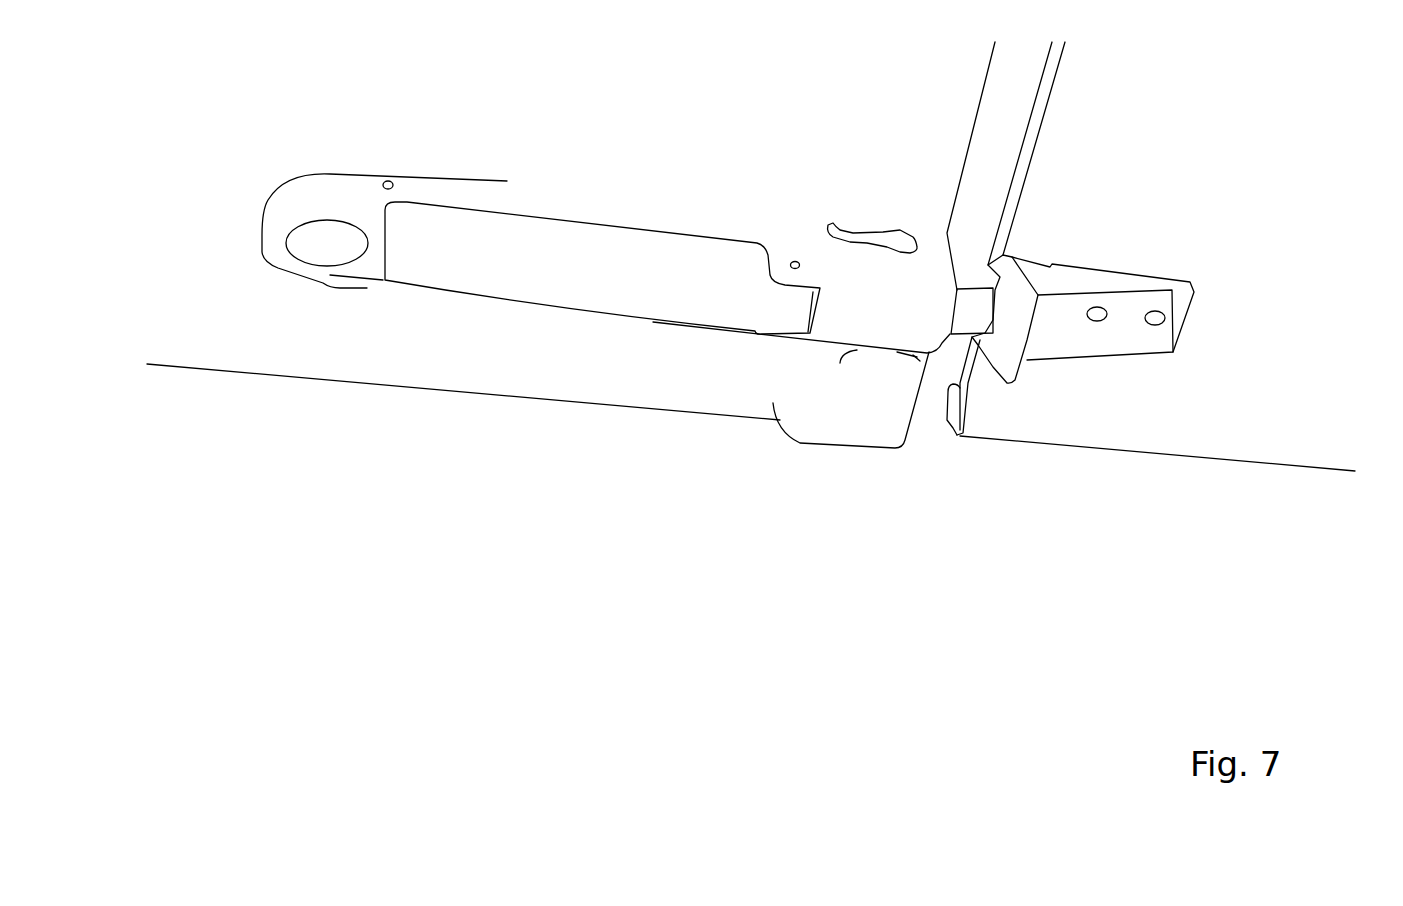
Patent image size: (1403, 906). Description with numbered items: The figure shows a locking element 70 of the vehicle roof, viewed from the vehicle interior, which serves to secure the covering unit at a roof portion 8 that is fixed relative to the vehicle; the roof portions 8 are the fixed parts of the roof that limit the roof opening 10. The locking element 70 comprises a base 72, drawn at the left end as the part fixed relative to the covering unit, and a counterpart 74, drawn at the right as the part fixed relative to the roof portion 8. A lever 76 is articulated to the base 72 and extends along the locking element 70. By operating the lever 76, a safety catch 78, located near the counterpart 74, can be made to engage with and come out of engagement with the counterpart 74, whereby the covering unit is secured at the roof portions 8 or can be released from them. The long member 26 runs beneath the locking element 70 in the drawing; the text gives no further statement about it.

The roof portion 8 is at (1148, 452).
The roof opening 10 is at (962, 333).
The frame tube 26 is at (511, 397).
The locking element 70 is at (442, 297).
The base 72 is at (350, 288).
The counterpart 74 is at (1100, 355).
The lever 76 is at (650, 325).
The safety catch 78 is at (950, 335).